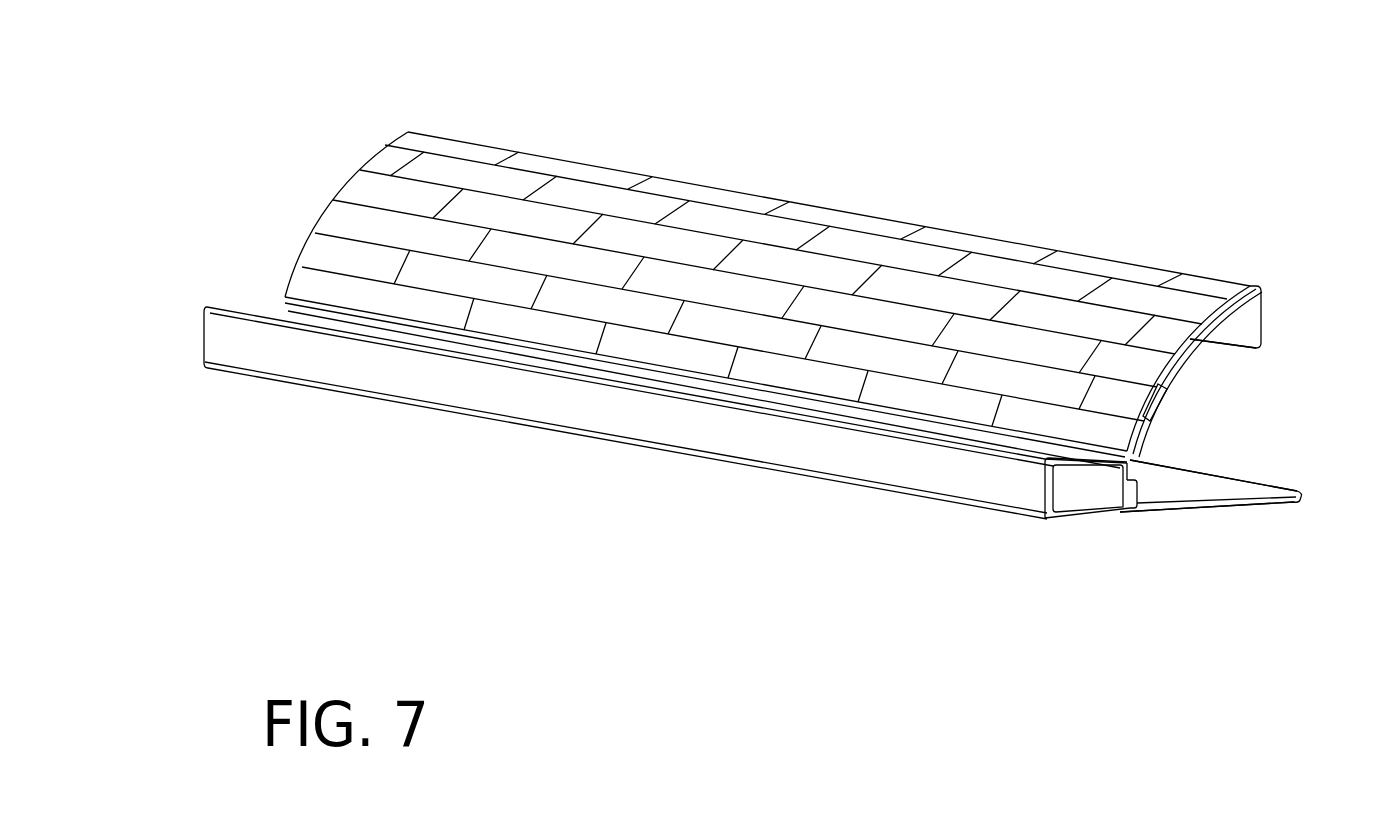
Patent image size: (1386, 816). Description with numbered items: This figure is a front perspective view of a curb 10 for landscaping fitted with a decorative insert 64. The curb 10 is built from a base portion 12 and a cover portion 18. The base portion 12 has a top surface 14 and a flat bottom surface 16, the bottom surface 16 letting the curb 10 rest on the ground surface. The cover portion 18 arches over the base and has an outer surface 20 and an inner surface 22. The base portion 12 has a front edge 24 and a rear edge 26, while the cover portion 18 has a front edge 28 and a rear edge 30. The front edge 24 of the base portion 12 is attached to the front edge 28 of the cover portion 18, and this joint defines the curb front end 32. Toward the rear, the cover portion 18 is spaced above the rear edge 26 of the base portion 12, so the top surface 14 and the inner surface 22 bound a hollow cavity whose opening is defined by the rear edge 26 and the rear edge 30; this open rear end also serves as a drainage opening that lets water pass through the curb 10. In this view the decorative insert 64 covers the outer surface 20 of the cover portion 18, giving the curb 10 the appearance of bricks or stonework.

The curb 10 is at (377, 163).
The decorative insert 64 is at (813, 263).
The cover portion 18 is at (1217, 330).
The inner surface 22 is at (1237, 330).
The rear edge 30 is at (1253, 342).
The outer surface 20 is at (937, 473).
The curb front end 32 is at (677, 443).
The front edge 28 is at (225, 344).
The front edge 24 is at (1053, 520).
The top surface 14 is at (1130, 510).
The base portion 12 is at (1207, 487).
The rear edge 26 is at (1263, 484).
The bottom surface 16 is at (1271, 506).